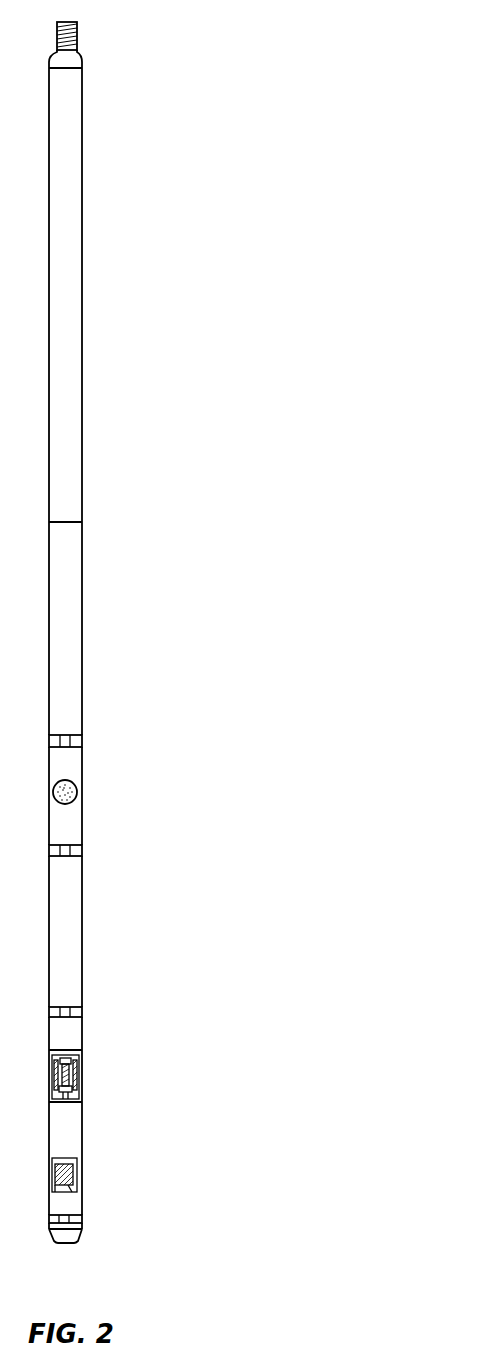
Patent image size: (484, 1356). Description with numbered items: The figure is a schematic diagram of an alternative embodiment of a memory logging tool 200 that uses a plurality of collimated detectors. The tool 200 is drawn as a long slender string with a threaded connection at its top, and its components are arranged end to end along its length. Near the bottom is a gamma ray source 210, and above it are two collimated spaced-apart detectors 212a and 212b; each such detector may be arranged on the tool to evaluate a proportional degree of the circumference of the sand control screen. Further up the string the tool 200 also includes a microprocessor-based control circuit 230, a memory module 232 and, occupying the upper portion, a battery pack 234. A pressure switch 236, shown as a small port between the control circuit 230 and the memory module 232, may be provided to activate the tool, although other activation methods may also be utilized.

The memory logging tool 200 is at (352, 367).
The battery pack 234 is at (113, 292).
The memory module 232 is at (113, 634).
The pressure switch 236 is at (113, 792).
The microprocessor-based control circuit 230 is at (113, 931).
The collimated detector 212b is at (121, 1013).
The collimated detector 212a is at (120, 1087).
The gamma ray source 210 is at (113, 1170).